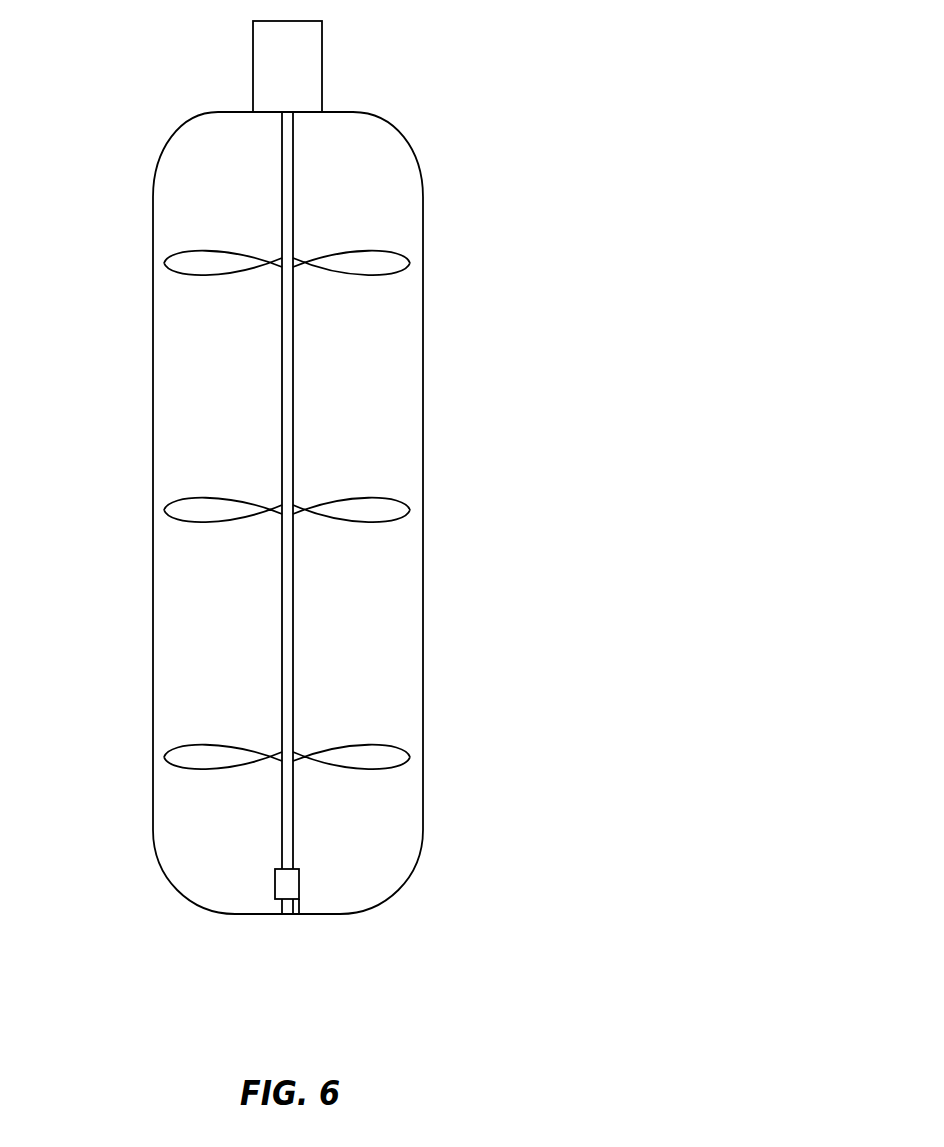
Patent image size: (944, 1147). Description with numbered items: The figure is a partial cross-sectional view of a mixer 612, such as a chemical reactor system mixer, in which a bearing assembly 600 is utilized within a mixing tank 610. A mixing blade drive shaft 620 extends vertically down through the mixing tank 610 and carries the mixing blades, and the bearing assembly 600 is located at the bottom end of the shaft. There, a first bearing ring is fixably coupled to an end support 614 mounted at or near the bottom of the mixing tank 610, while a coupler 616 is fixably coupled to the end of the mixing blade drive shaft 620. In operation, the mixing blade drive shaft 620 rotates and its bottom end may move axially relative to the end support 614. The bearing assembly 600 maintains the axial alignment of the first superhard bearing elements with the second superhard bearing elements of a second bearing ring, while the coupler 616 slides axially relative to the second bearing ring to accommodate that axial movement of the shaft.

The bearing assembly 600 is at (308, 908).
The mixing tank 610 is at (422, 557).
The mixer 612 is at (527, 102).
The end support 614 is at (290, 917).
The coupler 616 is at (287, 885).
The mixing blade drive shaft 620 is at (293, 379).